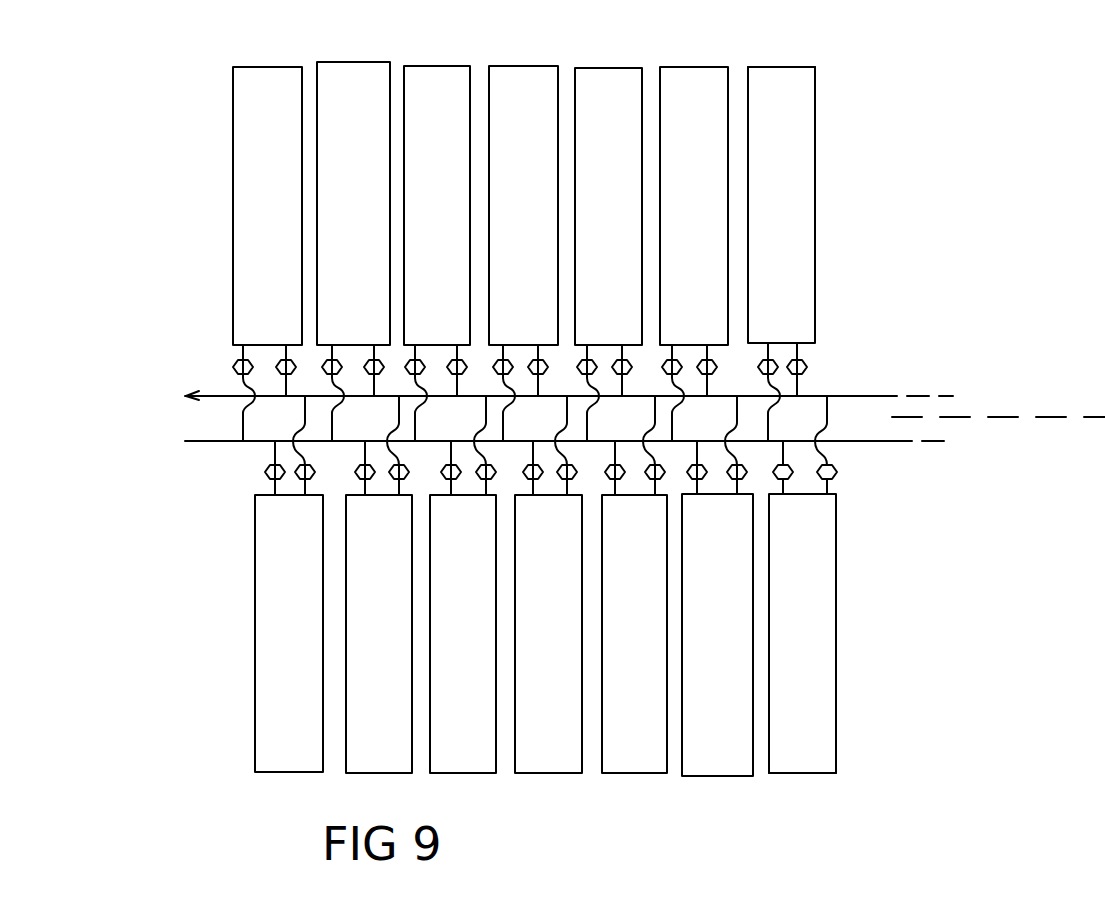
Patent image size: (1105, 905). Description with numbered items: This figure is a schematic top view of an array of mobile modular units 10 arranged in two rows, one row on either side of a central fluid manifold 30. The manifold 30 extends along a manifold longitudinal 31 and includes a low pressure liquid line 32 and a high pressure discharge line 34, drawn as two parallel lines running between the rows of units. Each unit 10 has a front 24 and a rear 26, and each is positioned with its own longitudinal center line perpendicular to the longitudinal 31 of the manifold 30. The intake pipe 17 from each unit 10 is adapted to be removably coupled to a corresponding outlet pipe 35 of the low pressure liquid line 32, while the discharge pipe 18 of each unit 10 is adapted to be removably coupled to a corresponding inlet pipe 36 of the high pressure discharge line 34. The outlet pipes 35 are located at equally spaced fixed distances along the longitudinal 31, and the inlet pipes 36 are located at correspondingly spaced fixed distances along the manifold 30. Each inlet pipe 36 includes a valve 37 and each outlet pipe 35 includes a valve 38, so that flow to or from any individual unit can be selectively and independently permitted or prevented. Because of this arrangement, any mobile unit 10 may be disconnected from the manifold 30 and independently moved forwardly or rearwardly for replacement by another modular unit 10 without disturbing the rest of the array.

The mobile modular unit 10 is at (272, 230).
The intake pipe 17 is at (835, 487).
The discharge pipe 18 is at (783, 490).
The front 24 is at (776, 66).
The rear 26 is at (237, 341).
The fluid manifold 30 is at (973, 347).
The manifold longitudinal 31 is at (1019, 417).
The low pressure liquid line 32 is at (890, 392).
The high pressure discharge line 34 is at (898, 443).
The outlet pipe 35 is at (832, 412).
The inlet pipe 36 is at (792, 452).
The valve 37 is at (831, 469).
The valve 38 is at (776, 476).